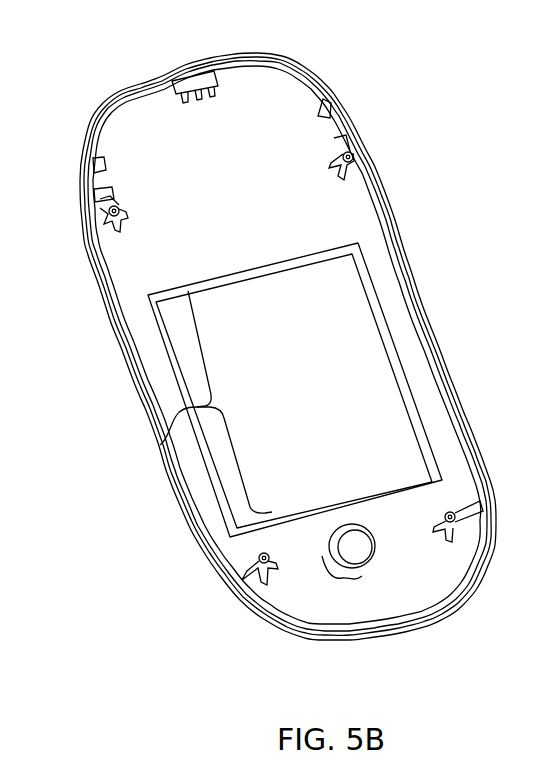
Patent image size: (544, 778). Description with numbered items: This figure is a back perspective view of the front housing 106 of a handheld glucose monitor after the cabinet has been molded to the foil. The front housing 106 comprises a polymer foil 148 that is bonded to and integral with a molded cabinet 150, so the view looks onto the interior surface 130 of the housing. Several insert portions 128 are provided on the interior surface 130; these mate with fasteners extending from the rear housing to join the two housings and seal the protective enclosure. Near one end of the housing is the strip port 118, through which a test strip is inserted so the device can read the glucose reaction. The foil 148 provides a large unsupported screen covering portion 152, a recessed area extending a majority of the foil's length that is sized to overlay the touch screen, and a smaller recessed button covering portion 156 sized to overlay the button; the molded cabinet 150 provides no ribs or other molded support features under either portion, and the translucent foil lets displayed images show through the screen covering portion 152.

The front housing 106 is at (86, 134).
The strip port 118 is at (191, 74).
The insert portion 128 is at (100, 211).
The interior surface 130 is at (287, 133).
The polymer foil 148 is at (370, 393).
The molded cabinet 150 is at (122, 328).
The screen covering portion 152 is at (160, 445).
The button covering portion 156 is at (338, 567).